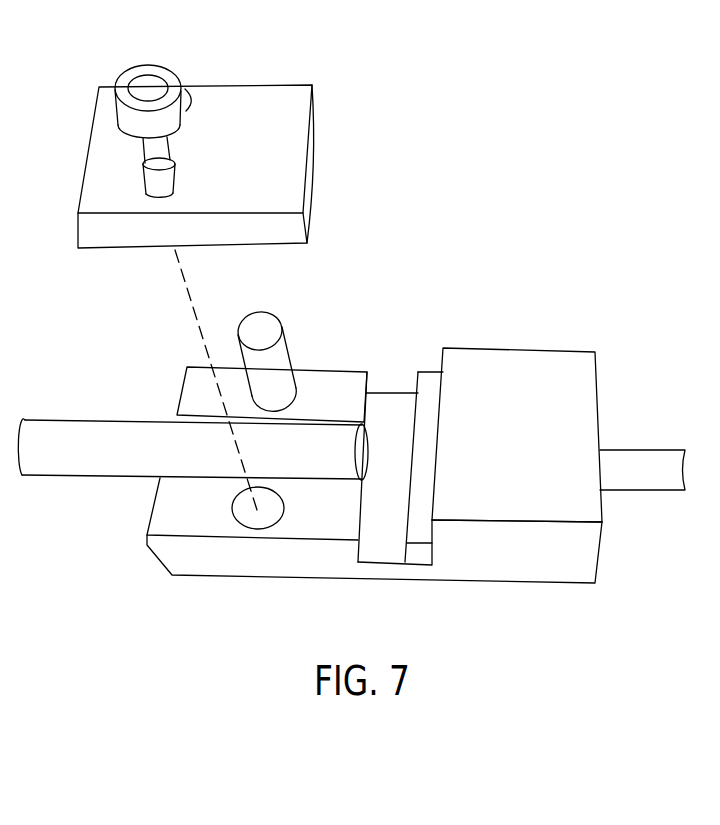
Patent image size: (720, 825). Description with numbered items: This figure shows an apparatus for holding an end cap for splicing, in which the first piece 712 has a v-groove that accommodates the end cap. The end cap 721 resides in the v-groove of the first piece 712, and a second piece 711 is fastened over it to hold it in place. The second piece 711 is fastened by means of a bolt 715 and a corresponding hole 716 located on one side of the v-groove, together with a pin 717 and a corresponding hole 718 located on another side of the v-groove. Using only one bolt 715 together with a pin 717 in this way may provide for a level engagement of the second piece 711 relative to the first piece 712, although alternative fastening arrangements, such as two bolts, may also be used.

The second piece 711 is at (257, 85).
The first piece 712 is at (320, 563).
The bolt 715 is at (148, 62).
The hole 716 is at (257, 532).
The pin 717 is at (282, 330).
The hole 718 is at (188, 88).
The end cap 721 is at (53, 418).